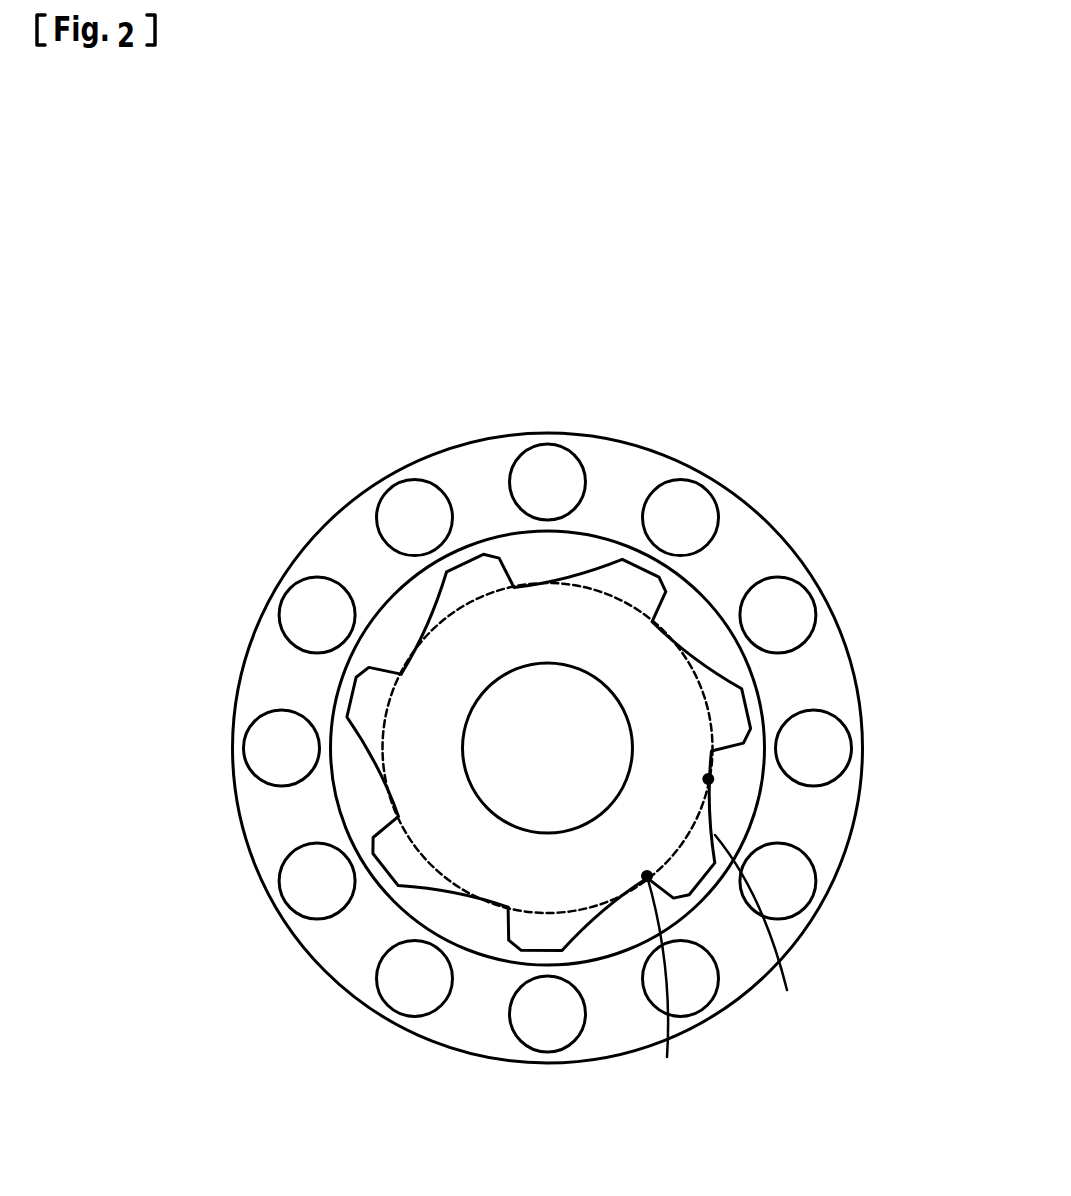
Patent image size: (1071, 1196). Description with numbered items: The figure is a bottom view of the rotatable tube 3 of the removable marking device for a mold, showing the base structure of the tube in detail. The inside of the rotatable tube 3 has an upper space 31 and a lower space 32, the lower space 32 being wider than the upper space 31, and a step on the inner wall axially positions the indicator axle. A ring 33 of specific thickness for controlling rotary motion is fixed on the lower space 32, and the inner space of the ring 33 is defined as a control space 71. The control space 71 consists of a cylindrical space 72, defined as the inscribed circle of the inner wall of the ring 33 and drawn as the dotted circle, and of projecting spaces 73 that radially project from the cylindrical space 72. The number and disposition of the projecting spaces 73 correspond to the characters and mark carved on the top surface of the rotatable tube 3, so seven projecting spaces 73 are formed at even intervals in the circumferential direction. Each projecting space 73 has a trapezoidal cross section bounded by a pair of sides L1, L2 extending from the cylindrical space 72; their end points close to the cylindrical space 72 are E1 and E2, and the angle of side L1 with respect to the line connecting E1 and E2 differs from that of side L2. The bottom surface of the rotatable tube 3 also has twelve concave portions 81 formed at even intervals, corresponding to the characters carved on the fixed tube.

The rotatable tube 3 is at (796, 494).
The upper space 31 is at (559, 690).
The lower space 32 is at (672, 697).
The ring 33 is at (748, 773).
The control space 71 is at (548, 876).
The cylindrical space 72 is at (478, 872).
The projecting space 73 is at (525, 937).
The concave portion 81 is at (303, 902).
The end point E1 is at (708, 779).
The end point E2 is at (647, 876).
The side L1 is at (764, 932).
The side L2 is at (665, 986).